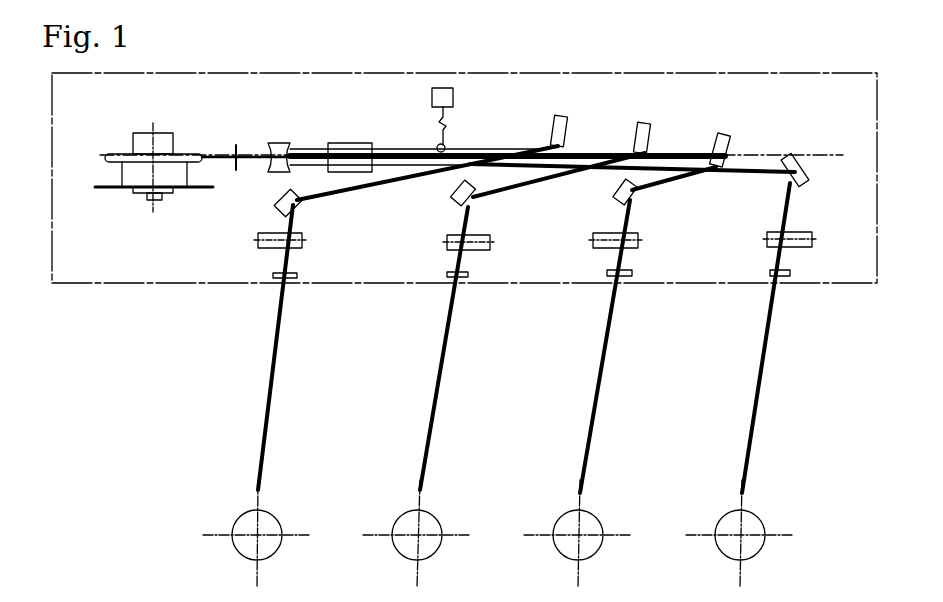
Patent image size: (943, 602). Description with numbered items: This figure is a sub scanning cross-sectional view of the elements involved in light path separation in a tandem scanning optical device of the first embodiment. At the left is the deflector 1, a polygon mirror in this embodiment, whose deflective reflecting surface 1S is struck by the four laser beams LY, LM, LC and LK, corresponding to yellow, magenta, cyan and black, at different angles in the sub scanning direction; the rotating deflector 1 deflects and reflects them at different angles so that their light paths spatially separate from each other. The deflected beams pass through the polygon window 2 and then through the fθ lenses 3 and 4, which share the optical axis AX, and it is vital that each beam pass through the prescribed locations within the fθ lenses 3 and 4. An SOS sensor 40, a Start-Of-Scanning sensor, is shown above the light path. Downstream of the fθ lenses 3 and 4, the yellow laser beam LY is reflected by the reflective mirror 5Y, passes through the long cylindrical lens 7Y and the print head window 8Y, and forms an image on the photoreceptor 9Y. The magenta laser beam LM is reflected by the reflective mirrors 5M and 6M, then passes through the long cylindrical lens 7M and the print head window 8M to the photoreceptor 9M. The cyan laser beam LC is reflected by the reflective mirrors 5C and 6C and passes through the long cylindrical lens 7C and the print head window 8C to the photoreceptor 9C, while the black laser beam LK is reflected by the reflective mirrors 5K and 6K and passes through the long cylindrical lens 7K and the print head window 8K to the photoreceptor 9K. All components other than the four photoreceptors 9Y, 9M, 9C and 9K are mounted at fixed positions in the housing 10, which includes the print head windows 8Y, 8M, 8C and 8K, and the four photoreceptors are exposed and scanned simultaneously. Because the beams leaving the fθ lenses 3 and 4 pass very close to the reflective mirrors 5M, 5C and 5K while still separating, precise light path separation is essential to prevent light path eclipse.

The deflector 1 is at (166, 140).
The deflective reflecting surface 1S is at (178, 155).
The polygon window 2 is at (236, 144).
The fθ lens 3 is at (278, 141).
The fθ lens 4 is at (360, 143).
The SOS sensor 40 is at (432, 98).
The reflective mirror 5K is at (557, 117).
The reflective mirror 5C is at (642, 123).
The reflective mirror 5M is at (720, 134).
The reflective mirror 5Y is at (792, 156).
The reflective mirror 6K is at (280, 202).
The reflective mirror 6C is at (456, 200).
The reflective mirror 6M is at (617, 200).
The long cylindrical lens 7K is at (298, 247).
The long cylindrical lens 7C is at (485, 249).
The long cylindrical lens 7M is at (632, 245).
The long cylindrical lens 7Y is at (805, 246).
The print head window 8K is at (274, 280).
The print head window 8C is at (444, 280).
The print head window 8M is at (609, 280).
The print head window 8Y is at (771, 280).
The photoreceptor 9K is at (244, 522).
The photoreceptor 9C is at (405, 522).
The photoreceptor 9M is at (567, 522).
The photoreceptor 9Y is at (727, 522).
The housing 10 is at (185, 284).
The laser beam LK is at (478, 147).
The laser beam LC is at (592, 152).
The laser beam LM is at (677, 155).
The laser beam LY is at (753, 177).
The optical axis AX is at (474, 179).